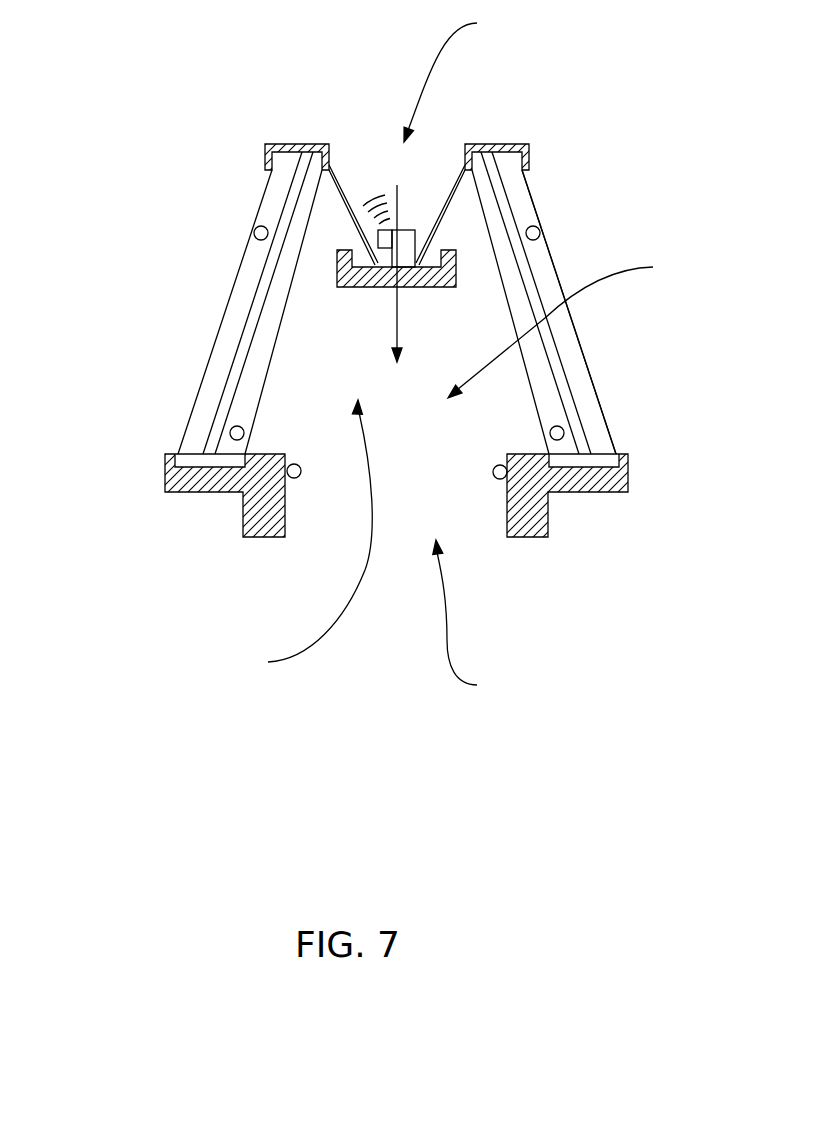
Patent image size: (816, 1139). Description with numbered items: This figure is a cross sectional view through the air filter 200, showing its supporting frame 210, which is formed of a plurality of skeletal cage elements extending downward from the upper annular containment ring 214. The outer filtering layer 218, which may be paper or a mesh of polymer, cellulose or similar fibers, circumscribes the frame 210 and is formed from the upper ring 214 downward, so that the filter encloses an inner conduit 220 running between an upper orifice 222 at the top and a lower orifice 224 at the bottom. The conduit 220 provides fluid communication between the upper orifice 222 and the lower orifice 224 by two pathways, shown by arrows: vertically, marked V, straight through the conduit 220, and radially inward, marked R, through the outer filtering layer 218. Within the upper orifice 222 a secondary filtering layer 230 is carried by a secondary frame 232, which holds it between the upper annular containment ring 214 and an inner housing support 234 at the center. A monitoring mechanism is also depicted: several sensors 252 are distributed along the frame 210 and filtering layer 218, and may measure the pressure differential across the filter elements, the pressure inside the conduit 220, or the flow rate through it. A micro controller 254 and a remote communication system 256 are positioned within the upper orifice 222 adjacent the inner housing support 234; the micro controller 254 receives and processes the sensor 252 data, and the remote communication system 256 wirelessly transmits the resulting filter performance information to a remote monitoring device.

The air filter 200 is at (398, 391).
The supporting frame 210 is at (245, 320).
The upper annular containment ring 214 is at (265, 146).
The outer filtering layer 218 is at (592, 372).
The inner conduit 220 is at (298, 537).
The upper orifice 222 is at (462, 77).
The lower orifice 224 is at (477, 620).
The secondary filtering layer 230 is at (344, 190).
The secondary frame 232 is at (452, 212).
The inner housing support 234 is at (372, 289).
The sensors 252 is at (256, 229).
The micro controller 254 is at (410, 238).
The remote communication system 256 is at (384, 236).